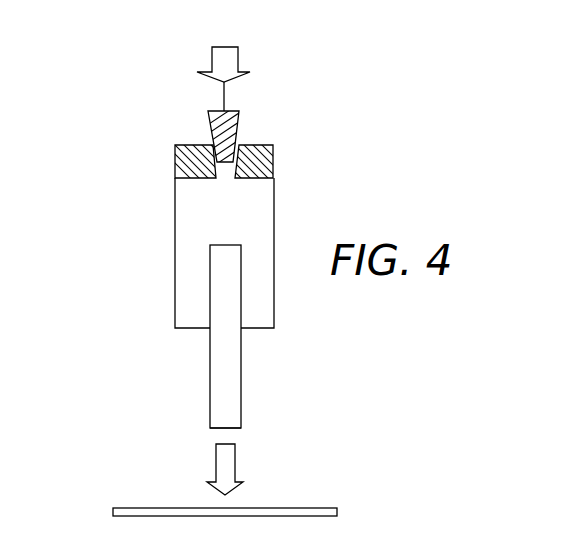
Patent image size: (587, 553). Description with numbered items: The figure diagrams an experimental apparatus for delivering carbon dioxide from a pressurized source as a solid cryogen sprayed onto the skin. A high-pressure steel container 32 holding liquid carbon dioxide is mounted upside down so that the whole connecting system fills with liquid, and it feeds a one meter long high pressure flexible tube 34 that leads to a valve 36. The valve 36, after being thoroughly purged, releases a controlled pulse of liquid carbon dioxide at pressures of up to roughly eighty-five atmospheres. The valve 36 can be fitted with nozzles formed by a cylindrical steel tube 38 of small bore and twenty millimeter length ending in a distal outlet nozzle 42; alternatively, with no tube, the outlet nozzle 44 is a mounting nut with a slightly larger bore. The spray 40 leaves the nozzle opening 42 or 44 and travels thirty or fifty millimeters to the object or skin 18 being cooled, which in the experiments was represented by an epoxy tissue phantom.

The skin 18 is at (152, 508).
The steel container 32 is at (206, 60).
The high pressure flexible tube 34 is at (233, 97).
The valve 36 is at (166, 155).
The cylindrical steel tube 38 is at (215, 361).
The spray 40 is at (235, 465).
The distal outlet nozzle 42 is at (230, 428).
The outlet nozzle 44 is at (241, 330).